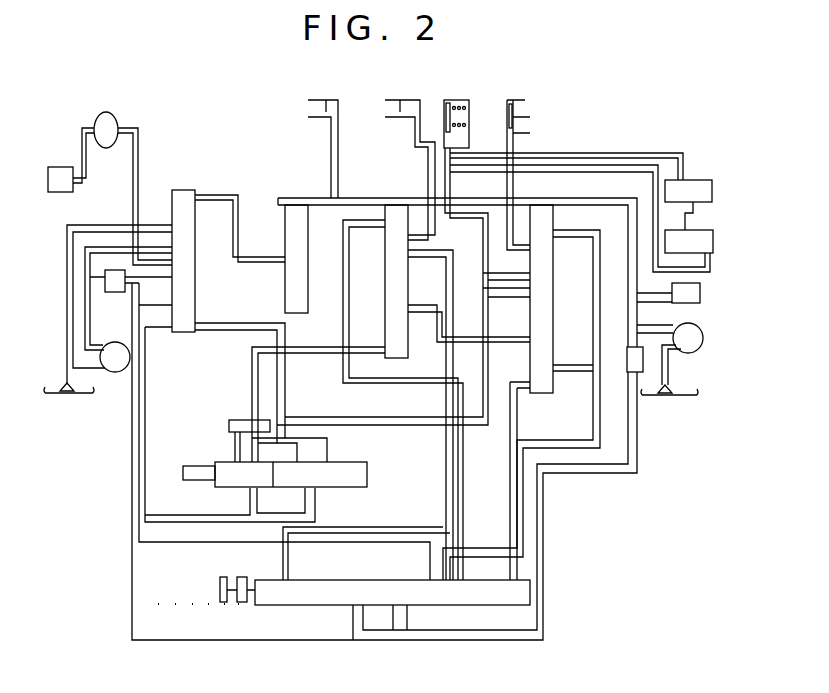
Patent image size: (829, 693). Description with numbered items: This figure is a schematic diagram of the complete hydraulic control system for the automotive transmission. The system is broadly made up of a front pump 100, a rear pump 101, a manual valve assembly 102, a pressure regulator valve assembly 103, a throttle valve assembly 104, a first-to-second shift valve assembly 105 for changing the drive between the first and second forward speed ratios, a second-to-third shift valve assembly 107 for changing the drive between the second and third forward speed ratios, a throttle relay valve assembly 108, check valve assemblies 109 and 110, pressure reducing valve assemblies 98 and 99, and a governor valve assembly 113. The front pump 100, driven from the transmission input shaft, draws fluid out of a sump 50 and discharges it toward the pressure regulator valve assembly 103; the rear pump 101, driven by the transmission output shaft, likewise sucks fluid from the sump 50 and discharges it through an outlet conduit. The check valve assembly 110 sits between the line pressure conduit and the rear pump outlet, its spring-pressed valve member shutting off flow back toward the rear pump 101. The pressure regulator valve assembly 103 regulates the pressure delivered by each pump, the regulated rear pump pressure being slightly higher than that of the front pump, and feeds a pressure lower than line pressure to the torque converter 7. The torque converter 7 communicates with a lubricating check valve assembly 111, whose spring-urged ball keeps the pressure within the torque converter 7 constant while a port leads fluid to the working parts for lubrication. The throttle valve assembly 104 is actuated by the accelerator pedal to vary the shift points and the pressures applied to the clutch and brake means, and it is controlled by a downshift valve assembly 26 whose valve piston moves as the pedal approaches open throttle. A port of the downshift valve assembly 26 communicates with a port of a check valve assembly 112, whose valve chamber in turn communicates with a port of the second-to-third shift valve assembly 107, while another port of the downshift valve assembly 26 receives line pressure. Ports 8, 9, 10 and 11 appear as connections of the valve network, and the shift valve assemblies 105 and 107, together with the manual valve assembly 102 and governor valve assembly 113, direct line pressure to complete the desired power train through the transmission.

The torque converter 7 is at (117, 112).
The port to clutch 8 is at (323, 135).
The port to clutch 9 is at (410, 156).
The port to brake 10 is at (456, 110).
The port to brake 11 is at (518, 161).
The downshift valve assembly 26 is at (215, 465).
The sump 50 is at (688, 397).
The pressure reducing valve assembly 98 is at (703, 180).
The pressure reducing valve assembly 99 is at (705, 255).
The front pump 100 is at (108, 372).
The rear pump 101 is at (700, 347).
The manual valve assembly 102 is at (227, 578).
The pressure regulator valve assembly 103 is at (198, 191).
The throttle valve assembly 104 is at (368, 469).
The 1-2 shift valve assembly 105 is at (548, 199).
The 2-3 shift valve assembly 107 is at (396, 198).
The throttle relay valve assembly 108 is at (299, 198).
The check valve assembly 109 is at (112, 292).
The check valve assembly 110 is at (627, 366).
The lubricating check valve assembly 111 is at (76, 187).
The check valve assembly 112 is at (241, 419).
The governor valve assembly 113 is at (700, 298).